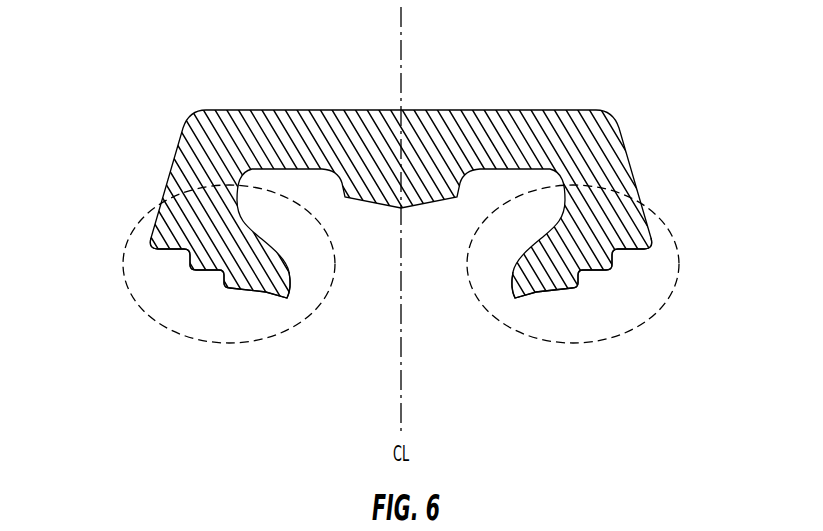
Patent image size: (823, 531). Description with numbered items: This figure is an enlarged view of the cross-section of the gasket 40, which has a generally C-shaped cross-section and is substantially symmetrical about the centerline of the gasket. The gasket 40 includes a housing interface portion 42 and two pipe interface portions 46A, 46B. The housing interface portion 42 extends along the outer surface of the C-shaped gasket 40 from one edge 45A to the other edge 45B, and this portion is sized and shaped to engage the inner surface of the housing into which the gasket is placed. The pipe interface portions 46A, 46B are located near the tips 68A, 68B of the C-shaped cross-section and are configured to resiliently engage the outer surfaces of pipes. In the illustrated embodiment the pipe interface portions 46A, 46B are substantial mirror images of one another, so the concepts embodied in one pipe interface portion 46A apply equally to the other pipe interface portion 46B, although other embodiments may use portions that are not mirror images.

The gasket 40 is at (557, 58).
The housing interface portion 42 is at (304, 109).
The edge 45A is at (148, 248).
The edge 45B is at (654, 250).
The pipe interface portion 46A is at (158, 324).
The pipe interface portion 46B is at (658, 313).
The tip 68A is at (287, 300).
The tip 68B is at (515, 300).